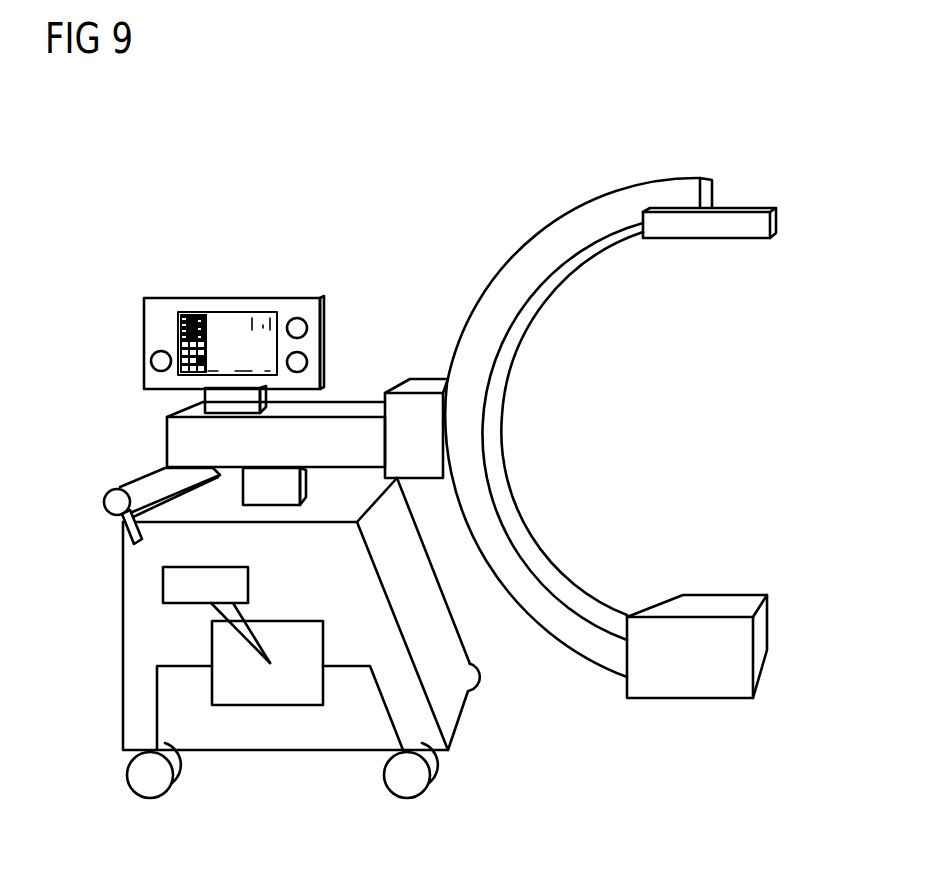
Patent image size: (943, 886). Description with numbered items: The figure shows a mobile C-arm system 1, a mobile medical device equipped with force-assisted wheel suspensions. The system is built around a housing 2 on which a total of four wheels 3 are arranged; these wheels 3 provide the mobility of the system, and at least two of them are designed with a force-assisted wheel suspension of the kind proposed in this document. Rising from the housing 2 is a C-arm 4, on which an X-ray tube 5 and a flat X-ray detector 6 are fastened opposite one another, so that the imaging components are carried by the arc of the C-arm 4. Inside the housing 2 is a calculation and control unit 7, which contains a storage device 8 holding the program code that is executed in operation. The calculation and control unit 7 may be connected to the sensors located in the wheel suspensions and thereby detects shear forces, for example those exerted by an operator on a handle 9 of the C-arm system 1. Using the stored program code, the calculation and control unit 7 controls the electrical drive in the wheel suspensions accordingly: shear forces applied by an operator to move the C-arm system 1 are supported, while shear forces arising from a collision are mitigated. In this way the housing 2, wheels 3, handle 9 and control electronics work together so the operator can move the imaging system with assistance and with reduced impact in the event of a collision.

The mobile C-arm system 1 is at (139, 222).
The housing 2 is at (123, 647).
The wheels 3 is at (150, 799).
The C-arm 4 is at (503, 270).
The X-ray tube 5 is at (768, 620).
The flat X-ray detector 6 is at (777, 223).
The calculation and control unit 7 is at (268, 707).
The storage device 8 is at (163, 588).
The handle 9 is at (104, 500).